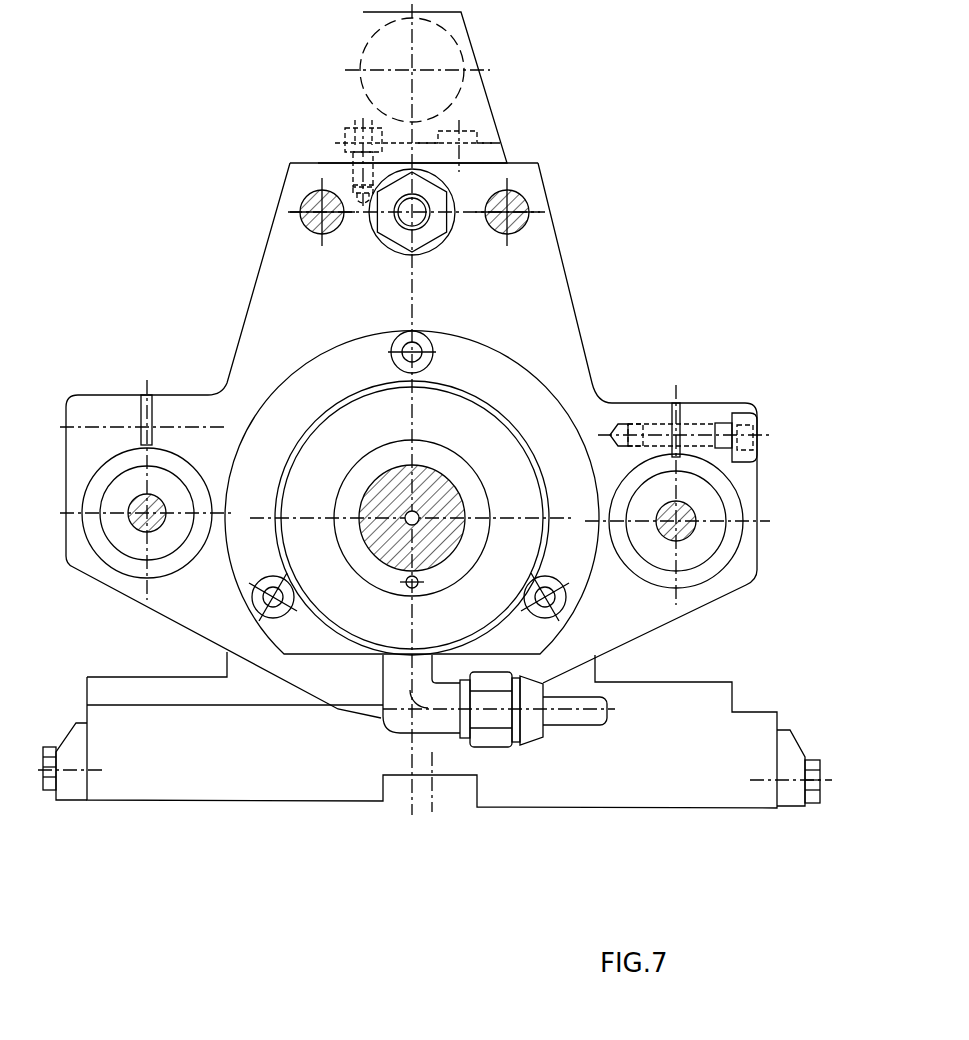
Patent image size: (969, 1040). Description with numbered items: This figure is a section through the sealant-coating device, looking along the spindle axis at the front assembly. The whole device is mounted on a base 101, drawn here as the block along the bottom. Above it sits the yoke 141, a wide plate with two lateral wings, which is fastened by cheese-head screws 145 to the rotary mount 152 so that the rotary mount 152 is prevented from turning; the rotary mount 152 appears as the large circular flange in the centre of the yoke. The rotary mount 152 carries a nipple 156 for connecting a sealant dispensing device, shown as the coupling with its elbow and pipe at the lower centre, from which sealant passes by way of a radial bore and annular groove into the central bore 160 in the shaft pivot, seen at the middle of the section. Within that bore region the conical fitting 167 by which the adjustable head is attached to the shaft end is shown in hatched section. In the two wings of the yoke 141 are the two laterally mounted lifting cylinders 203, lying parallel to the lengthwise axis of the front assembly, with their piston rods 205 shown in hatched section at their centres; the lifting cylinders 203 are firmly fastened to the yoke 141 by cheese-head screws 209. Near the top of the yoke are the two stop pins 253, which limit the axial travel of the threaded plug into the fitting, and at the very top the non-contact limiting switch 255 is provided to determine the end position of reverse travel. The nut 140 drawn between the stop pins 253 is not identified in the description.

The base 101 is at (198, 780).
The hexagonal nut 140 is at (434, 200).
The yoke 141 is at (552, 275).
The cheese-head screws 145 is at (420, 345).
The rotary mount 152 is at (342, 358).
The nipple 156 is at (500, 740).
The central bore 160 is at (418, 502).
The conical fitting 167 is at (388, 490).
The lifting cylinders 203 is at (103, 552).
The piston rods 205 is at (142, 530).
The cheese-head screws 209 is at (743, 418).
The stop pins 253 is at (313, 198).
The non-contact limiting switch 255 is at (458, 48).